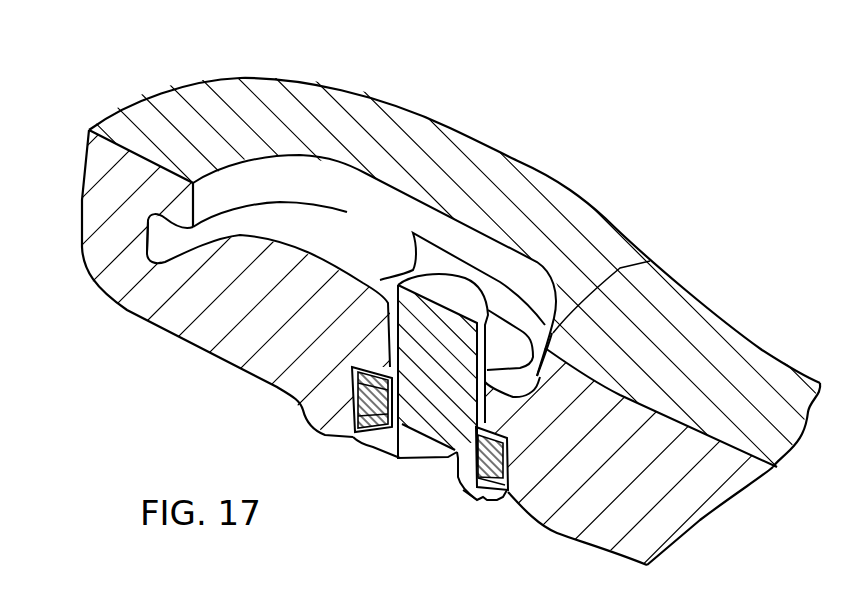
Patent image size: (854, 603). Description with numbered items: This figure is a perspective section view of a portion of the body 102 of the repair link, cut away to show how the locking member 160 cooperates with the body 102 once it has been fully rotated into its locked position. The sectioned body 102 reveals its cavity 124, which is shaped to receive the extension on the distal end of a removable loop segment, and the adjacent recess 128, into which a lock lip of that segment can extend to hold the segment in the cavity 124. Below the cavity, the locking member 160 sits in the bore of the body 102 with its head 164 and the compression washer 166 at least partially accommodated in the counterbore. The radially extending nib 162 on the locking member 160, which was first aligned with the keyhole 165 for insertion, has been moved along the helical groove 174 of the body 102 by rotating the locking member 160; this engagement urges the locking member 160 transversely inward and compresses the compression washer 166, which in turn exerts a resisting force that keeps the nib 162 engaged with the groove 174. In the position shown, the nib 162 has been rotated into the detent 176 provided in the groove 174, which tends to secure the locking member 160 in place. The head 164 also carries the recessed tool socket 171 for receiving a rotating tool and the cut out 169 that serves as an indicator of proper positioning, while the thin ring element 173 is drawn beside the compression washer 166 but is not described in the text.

The body 102 is at (510, 158).
The cavity 124 is at (247, 172).
The recess 128 is at (160, 237).
The locking member 160 is at (458, 488).
The nib 162 is at (517, 337).
The head 164 is at (358, 435).
The keyhole 165 is at (430, 445).
The compression washer 166 is at (510, 467).
The cut out 169 is at (472, 544).
The recessed tool socket 171 is at (473, 567).
The backup ring 173 is at (510, 500).
The groove 174 is at (370, 412).
The detent 176 is at (537, 340).